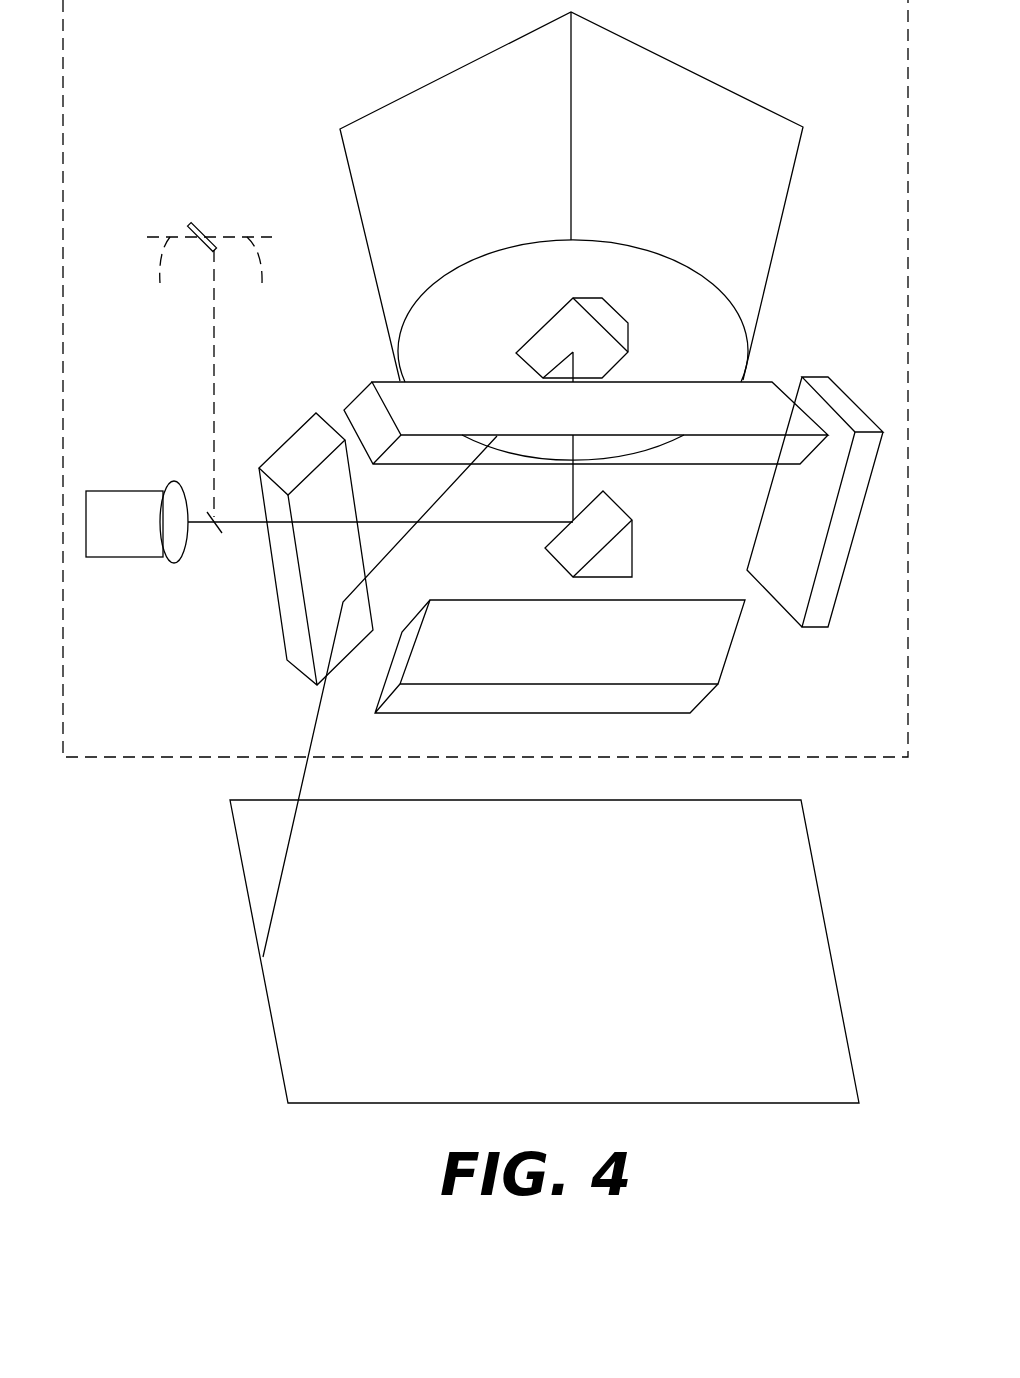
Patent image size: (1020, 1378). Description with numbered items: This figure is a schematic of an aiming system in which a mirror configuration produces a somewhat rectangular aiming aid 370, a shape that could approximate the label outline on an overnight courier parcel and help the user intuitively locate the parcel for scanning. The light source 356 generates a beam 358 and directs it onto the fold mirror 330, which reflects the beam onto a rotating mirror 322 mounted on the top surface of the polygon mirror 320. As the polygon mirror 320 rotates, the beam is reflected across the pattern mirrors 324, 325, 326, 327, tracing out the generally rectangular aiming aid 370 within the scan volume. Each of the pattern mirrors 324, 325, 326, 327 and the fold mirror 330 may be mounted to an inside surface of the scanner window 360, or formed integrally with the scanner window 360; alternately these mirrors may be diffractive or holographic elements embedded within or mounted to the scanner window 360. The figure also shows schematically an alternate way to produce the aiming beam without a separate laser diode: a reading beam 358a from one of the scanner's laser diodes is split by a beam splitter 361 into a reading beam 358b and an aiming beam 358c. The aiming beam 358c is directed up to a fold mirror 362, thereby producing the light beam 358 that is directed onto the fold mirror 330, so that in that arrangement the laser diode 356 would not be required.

The polygon mirror 320 is at (772, 262).
The rotating mirror 322 is at (608, 320).
The pattern mirror 324 is at (321, 590).
The pattern mirror 325 is at (693, 653).
The pattern mirror 326 is at (832, 568).
The pattern mirror 327 is at (760, 388).
The fold mirror 330 is at (617, 547).
The light source 356 is at (130, 491).
The beam 358 is at (240, 523).
The reading beam 358a is at (209, 276).
The reading beam 358b is at (265, 276).
The aiming beam 358c is at (215, 347).
The scanner window 360 is at (63, 150).
The beam splitter 361 is at (200, 228).
The fold mirror 362 is at (215, 532).
The aiming aid 370 is at (278, 1040).